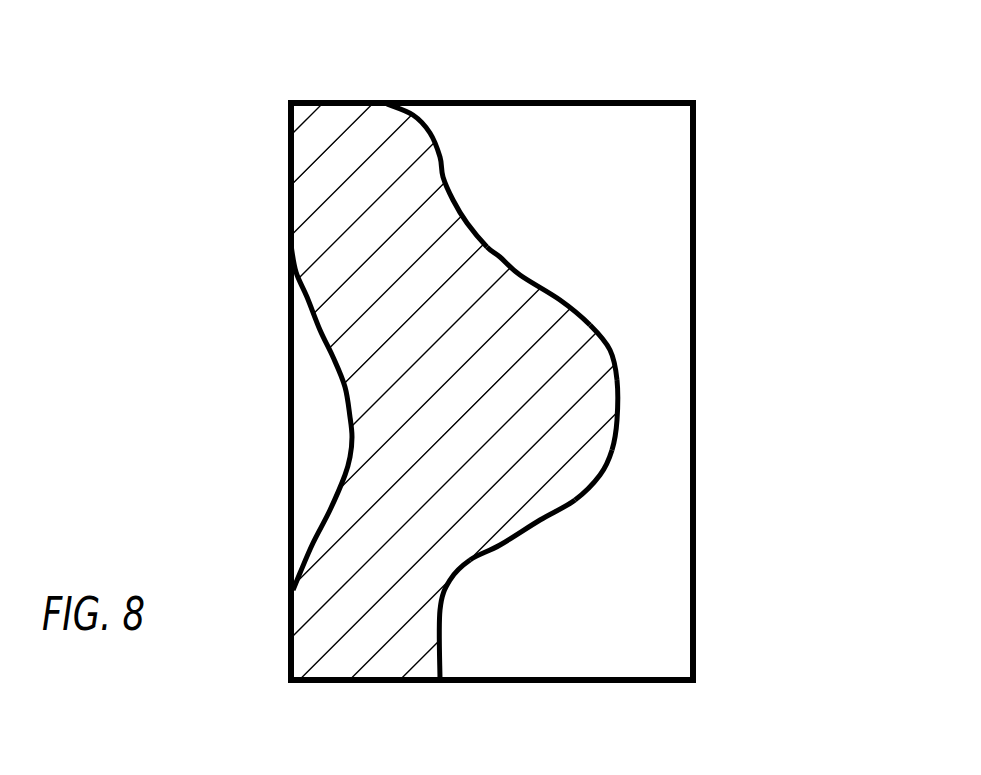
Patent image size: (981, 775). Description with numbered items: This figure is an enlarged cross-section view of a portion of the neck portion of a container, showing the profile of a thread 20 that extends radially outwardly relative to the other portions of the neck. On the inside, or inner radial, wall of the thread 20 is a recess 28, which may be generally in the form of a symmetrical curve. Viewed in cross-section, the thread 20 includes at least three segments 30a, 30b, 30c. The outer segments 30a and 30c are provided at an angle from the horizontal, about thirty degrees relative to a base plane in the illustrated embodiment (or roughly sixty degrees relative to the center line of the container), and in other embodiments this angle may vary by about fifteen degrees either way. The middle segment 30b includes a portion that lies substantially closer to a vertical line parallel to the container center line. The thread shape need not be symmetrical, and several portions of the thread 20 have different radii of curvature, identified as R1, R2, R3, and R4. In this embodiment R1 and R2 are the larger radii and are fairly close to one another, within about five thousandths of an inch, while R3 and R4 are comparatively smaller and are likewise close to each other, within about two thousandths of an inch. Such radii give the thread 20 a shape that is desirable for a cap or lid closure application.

The thread 20 is at (636, 363).
The recess 28 is at (323, 420).
The segment 30a is at (530, 288).
The segment 30b is at (617, 400).
The segment 30c is at (530, 520).
The radius R1 is at (475, 220).
The radius R2 is at (612, 332).
The radius R3 is at (614, 466).
The radius R4 is at (467, 574).